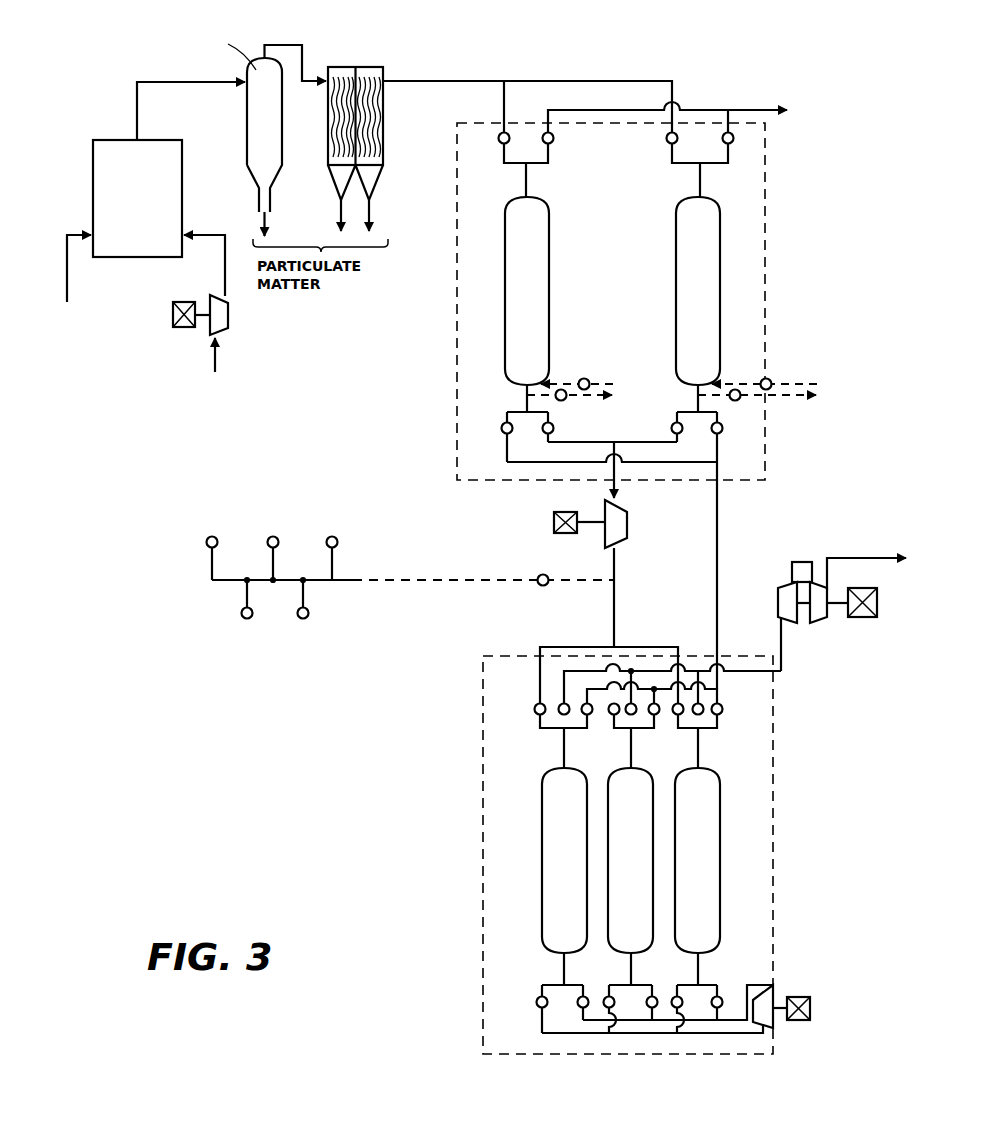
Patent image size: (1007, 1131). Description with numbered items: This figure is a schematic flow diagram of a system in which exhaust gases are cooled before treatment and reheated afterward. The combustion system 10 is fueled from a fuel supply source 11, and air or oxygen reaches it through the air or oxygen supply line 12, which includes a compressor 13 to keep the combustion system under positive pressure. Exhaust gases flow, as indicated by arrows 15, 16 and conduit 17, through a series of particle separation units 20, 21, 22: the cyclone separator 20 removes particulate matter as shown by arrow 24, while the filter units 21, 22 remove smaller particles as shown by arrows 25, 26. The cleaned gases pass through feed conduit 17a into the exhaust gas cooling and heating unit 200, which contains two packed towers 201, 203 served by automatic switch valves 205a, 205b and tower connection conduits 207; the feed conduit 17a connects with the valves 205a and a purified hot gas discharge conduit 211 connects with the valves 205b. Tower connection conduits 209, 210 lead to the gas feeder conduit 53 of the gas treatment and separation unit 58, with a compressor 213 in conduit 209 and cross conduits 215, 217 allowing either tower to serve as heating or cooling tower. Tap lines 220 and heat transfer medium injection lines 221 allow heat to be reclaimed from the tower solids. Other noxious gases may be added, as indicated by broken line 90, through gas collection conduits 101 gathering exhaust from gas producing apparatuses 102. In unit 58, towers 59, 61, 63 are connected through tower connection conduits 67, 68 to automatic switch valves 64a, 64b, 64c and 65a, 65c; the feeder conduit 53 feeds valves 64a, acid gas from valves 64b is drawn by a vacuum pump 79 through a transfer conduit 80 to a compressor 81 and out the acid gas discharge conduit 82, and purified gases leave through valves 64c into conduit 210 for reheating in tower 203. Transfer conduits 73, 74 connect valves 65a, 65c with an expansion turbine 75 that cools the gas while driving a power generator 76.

The combustion system 10 is at (150, 210).
The fuel supply source 11 is at (67, 297).
The air or oxygen supply line 12 is at (222, 238).
The compressor 13 is at (228, 315).
The arrow 15 is at (137, 100).
The arrow 16 is at (302, 45).
The conduit 17 is at (468, 78).
The feed conduit 17a is at (590, 80).
The particle separation unit 20 is at (277, 136).
The particle separation unit 21 is at (336, 186).
The particle separation unit 22 is at (374, 192).
The arrow 24 is at (262, 222).
The arrow 25 is at (339, 220).
The arrow 26 is at (371, 218).
The gas feeder conduit 53 is at (602, 648).
The gas treatment and separation unit 58 is at (795, 810).
The tower 59 is at (577, 871).
The tower 61 is at (644, 871).
The tower 63 is at (711, 871).
The automatic switch valve 64a is at (540, 703).
The automatic switch valve 64b is at (562, 714).
The automatic switch valve 64c is at (585, 714).
The automatic switch valve 65a is at (538, 1004).
The automatic switch valve 65c is at (718, 998).
The tower connection conduit 67 is at (560, 762).
The tower connection conduit 68 is at (562, 968).
The transfer conduit 73 is at (748, 1026).
The transfer conduit 74 is at (762, 983).
The expansion turbine 75 is at (770, 996).
The power generator 76 is at (800, 997).
The vacuum pump 79 is at (778, 608).
The transfer conduit 80 is at (792, 568).
The compressor 81 is at (826, 592).
The acid gas discharge conduit 82 is at (876, 556).
The broken line 90 is at (578, 584).
The gas collection conduits 101 is at (212, 562).
The gas producing apparatuses 102 is at (216, 537).
The exhaust gas cooling and heating unit 200 is at (770, 258).
The packed tower 201 is at (546, 302).
The packed tower 203 is at (717, 302).
The automatic switch valve 205a is at (500, 146).
The automatic switch valve 205b is at (553, 140).
The tower connection conduit 207 is at (530, 186).
The tower connection conduit 209 is at (616, 490).
The tower connection conduit 210 is at (717, 543).
The purified hot gas discharge conduit 211 is at (695, 110).
The compressor 213 is at (627, 527).
The cross conduit 215 is at (663, 446).
The cross conduit 217 is at (583, 462).
The tap line 220 is at (590, 400).
The heat transfer medium injection line 221 is at (590, 380).